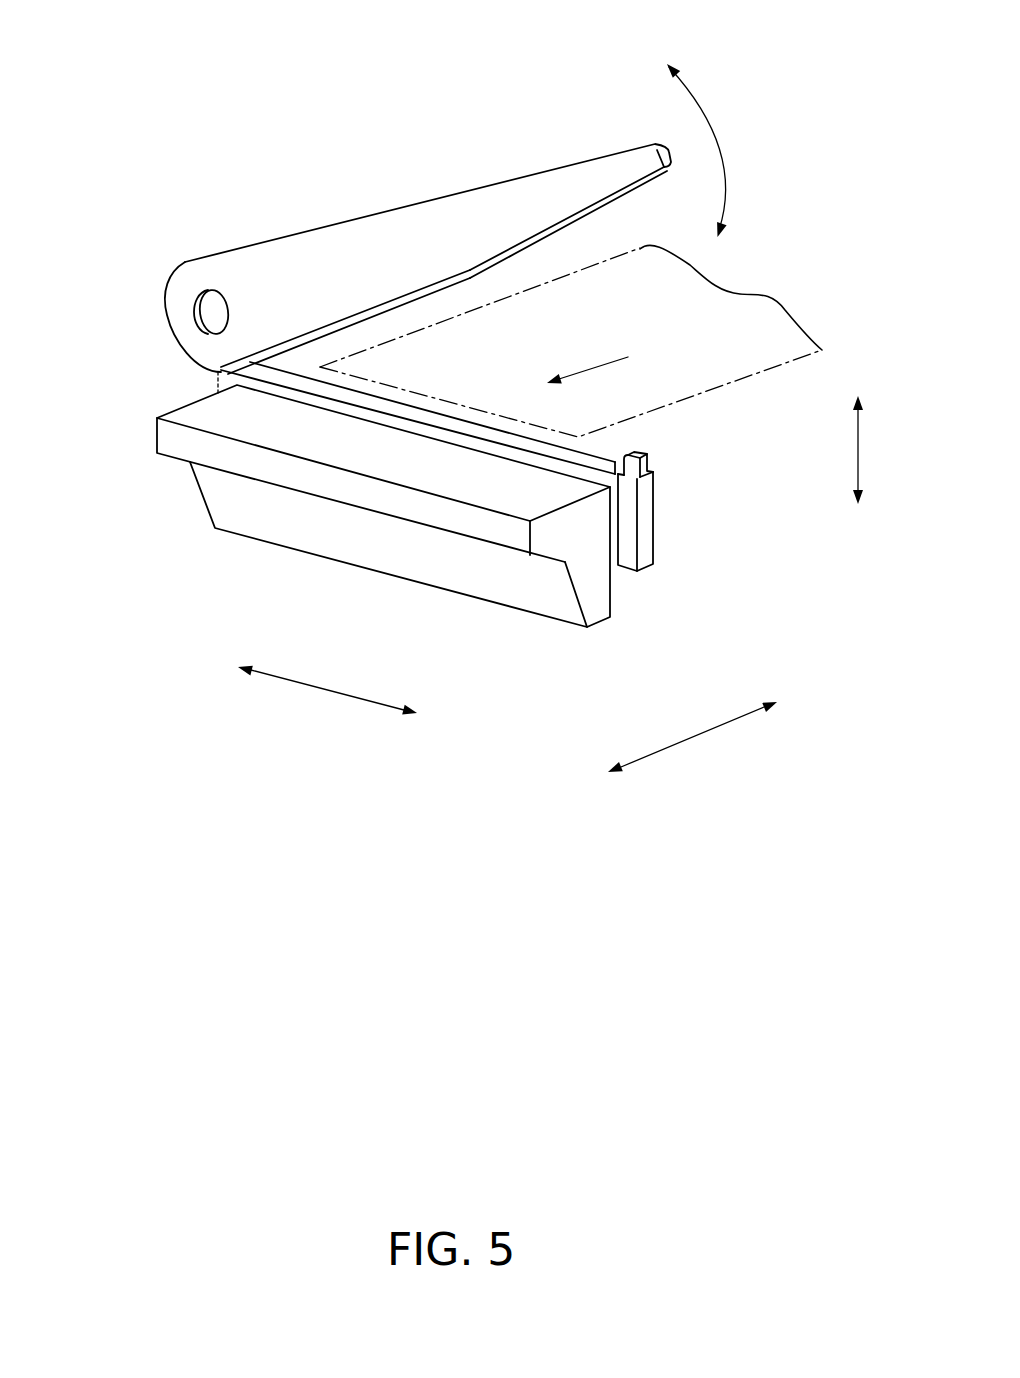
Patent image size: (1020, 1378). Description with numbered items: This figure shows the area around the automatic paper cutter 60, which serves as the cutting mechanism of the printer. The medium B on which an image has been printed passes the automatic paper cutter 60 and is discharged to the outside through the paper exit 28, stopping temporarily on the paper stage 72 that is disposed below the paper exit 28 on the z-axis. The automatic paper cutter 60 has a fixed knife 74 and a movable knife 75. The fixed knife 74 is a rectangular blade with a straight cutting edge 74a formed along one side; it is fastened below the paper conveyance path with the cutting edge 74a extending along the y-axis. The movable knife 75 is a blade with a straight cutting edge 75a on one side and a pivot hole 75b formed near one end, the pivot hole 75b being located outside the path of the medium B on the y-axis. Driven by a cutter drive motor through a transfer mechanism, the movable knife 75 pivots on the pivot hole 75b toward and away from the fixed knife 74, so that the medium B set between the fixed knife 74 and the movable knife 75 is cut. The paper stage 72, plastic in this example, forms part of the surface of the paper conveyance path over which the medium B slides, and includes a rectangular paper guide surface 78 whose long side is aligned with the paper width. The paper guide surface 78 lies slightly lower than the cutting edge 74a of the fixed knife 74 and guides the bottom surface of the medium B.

The automatic paper cutter 60 is at (368, 76).
The paper exit 28 is at (112, 360).
The paper guide surface 78 is at (200, 415).
The paper stage 72 is at (553, 597).
The fixed knife 74 is at (648, 528).
The cutting edge 74a is at (600, 463).
The movable knife 75 is at (583, 173).
The cutting edge 75a is at (483, 271).
The pivot hole 75b is at (194, 307).
The medium B is at (752, 318).